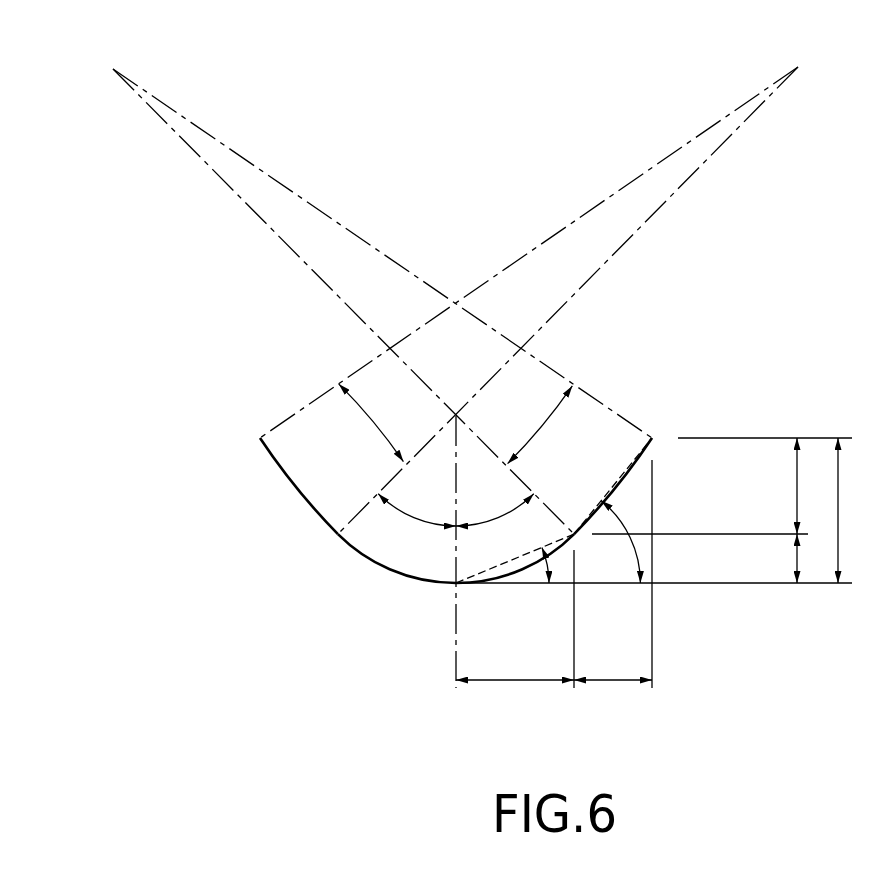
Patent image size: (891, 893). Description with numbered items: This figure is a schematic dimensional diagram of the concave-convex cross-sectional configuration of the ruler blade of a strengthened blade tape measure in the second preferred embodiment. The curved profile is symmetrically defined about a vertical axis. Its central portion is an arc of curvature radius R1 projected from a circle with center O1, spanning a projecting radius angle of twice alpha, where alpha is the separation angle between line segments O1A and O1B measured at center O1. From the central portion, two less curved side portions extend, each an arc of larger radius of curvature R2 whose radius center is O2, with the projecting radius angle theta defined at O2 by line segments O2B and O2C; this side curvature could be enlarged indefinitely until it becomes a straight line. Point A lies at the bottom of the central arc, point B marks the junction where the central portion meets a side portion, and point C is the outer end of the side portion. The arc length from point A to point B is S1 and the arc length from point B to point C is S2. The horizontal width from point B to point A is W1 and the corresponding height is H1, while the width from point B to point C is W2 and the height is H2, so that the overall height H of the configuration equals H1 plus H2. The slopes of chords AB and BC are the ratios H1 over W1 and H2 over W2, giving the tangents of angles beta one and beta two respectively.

The center of projecting circular radius R1 O1 is at (568, 377).
The radius center of projecting radius R2 O2 is at (370, 285).
The curvature radius of central portion R1 is at (415, 525).
The radius of curvature of side portion R2 is at (297, 487).
The point A is at (642, 599).
The point B is at (687, 593).
The point C is at (752, 549).
The arc length from point A to point B S1 is at (499, 585).
The arc length from point B to point C S2 is at (632, 465).
The height from point B to point A H1 is at (782, 558).
The height from point B to point C H2 is at (782, 486).
The overall height of concave-convex configuration H is at (823, 510).
The width from point B to point A W1 is at (515, 666).
The width from point B to point C W2 is at (613, 666).